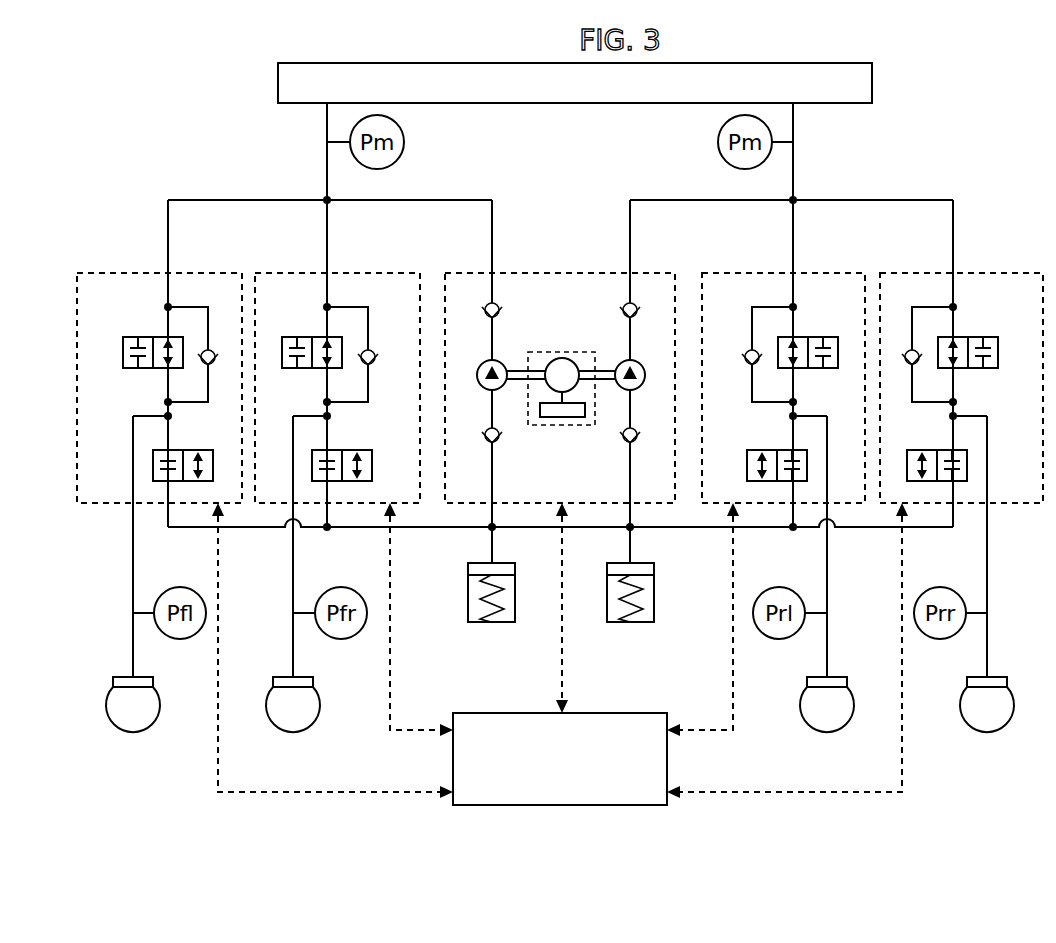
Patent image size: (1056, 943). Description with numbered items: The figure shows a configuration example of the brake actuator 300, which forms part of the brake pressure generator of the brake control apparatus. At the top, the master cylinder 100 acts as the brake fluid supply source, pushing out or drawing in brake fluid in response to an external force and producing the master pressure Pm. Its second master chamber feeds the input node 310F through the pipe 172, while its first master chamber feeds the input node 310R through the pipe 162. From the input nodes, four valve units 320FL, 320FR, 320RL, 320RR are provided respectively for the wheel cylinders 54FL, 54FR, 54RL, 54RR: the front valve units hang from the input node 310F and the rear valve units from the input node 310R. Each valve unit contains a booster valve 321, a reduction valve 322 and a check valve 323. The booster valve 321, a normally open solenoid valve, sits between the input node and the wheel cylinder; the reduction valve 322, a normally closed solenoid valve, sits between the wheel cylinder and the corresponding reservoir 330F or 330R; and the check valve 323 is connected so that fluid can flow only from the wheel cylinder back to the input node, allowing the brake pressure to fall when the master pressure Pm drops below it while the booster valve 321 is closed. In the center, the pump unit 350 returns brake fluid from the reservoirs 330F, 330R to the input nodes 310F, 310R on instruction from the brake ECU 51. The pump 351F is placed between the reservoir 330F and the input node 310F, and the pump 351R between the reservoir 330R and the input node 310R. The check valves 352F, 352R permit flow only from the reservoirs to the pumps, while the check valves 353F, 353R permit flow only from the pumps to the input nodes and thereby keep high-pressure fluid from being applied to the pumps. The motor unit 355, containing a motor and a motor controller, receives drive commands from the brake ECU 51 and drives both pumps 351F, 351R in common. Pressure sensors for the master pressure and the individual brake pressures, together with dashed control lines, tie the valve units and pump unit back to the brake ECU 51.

The master cylinder 100 is at (278, 82).
The pipe 172 is at (327, 130).
The pipe 162 is at (793, 128).
The brake actuator 300 is at (948, 192).
The input node 310F is at (327, 200).
The input node 310R is at (793, 200).
The valve unit 320FL is at (126, 272).
The valve unit 320FR is at (368, 272).
The valve unit 320RL is at (750, 272).
The valve unit 320RR is at (1000, 272).
The booster valve 321 is at (123, 352).
The reduction valve 322 is at (192, 450).
The check valve 323 is at (210, 348).
The pump unit 350 is at (560, 272).
The pump 351F is at (503, 362).
The pump 351R is at (619, 362).
The check valve 352F is at (498, 445).
The check valve 352R is at (624, 445).
The check valve 353F is at (500, 303).
The check valve 353R is at (622, 303).
The motor unit 355 is at (560, 428).
The reservoir 330F is at (487, 624).
The reservoir 330R is at (632, 624).
The wheel cylinder 54FL is at (133, 732).
The wheel cylinder 54FR is at (293, 732).
The wheel cylinder 54RL is at (827, 732).
The wheel cylinder 54RR is at (987, 732).
The brake ECU 51 is at (560, 805).